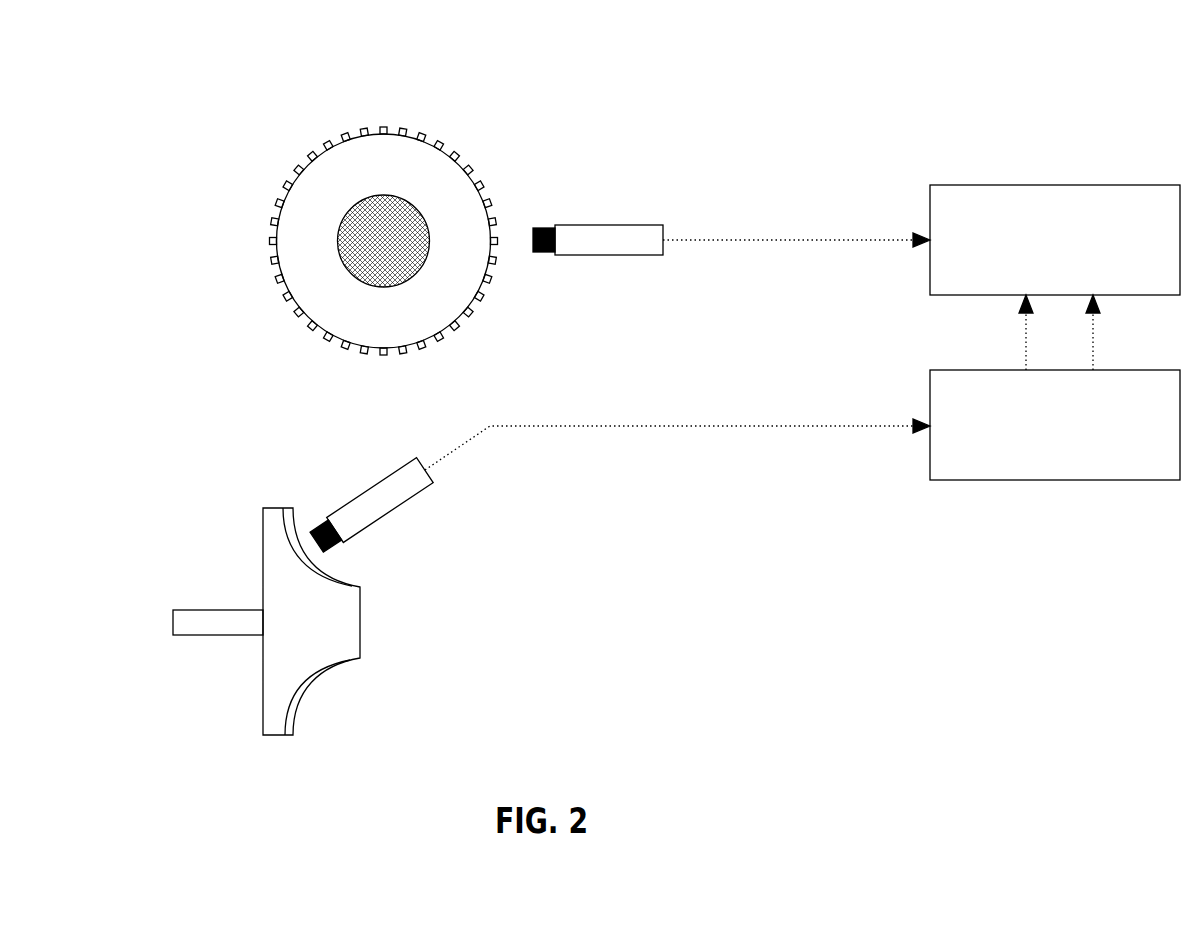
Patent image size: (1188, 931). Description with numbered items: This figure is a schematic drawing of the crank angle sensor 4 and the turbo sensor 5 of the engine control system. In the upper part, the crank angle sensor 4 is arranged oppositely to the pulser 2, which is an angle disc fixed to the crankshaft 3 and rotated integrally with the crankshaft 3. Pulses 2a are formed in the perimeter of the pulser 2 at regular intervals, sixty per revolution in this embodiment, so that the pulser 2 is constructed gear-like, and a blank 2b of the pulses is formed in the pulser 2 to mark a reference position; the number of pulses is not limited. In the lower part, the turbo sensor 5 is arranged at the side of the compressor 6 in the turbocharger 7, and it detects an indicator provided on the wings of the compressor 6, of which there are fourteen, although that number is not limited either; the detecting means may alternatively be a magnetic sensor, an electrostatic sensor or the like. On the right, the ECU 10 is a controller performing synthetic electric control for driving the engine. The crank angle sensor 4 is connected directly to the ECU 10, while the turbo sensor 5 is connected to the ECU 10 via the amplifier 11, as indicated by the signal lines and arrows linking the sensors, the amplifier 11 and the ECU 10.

The pulser 2 is at (397, 185).
The pulses 2a is at (490, 188).
The blank 2b is at (383, 123).
The crankshaft 3 is at (400, 262).
The crank angle sensor 4 is at (583, 238).
The turbo sensor 5 is at (388, 505).
The compressor 6 is at (280, 695).
The turbocharger 7 is at (281, 595).
The ECU 10 is at (1055, 240).
The amplifier 11 is at (1055, 425).